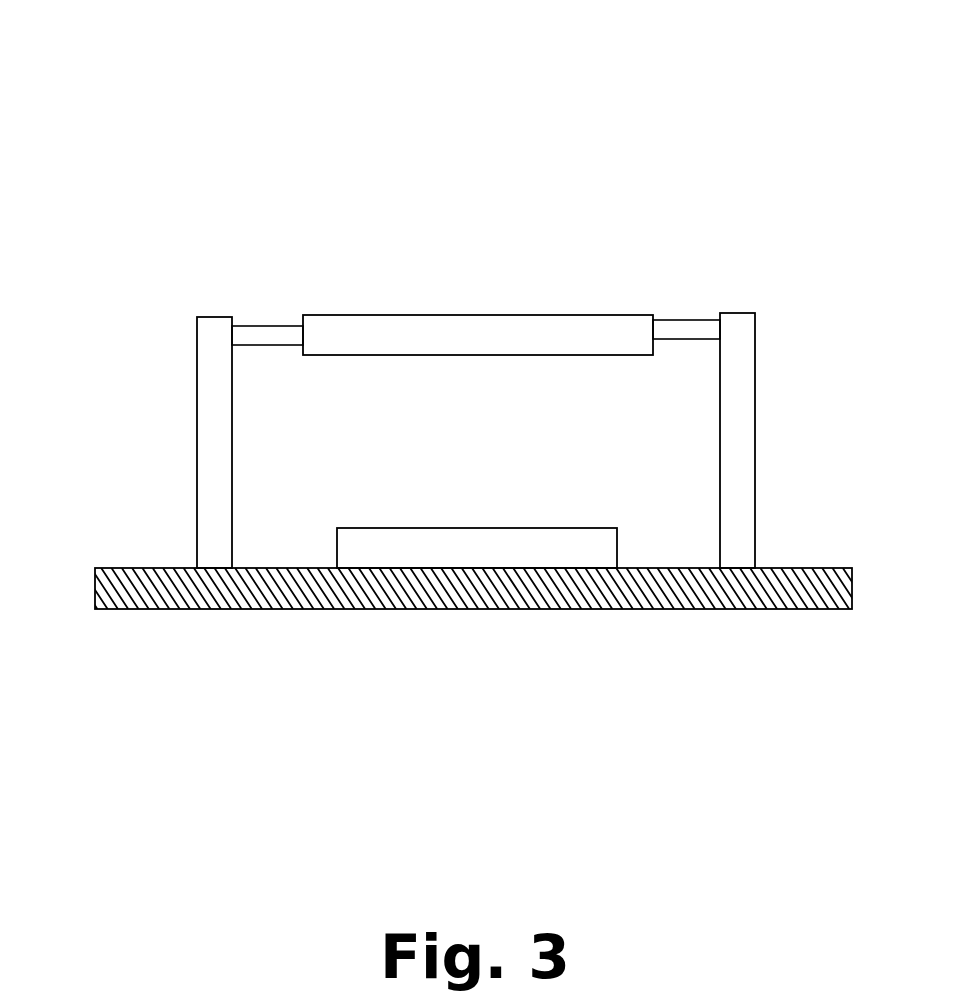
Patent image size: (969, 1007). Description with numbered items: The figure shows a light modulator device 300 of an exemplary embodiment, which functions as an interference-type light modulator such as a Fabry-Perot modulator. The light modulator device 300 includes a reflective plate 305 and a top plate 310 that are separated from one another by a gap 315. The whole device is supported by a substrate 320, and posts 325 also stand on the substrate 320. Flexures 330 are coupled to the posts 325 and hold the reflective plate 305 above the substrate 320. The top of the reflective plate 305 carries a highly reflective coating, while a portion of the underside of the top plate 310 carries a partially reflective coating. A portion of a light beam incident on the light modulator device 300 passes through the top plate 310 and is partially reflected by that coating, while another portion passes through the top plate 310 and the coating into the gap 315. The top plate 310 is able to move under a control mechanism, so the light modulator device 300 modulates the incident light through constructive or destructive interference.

The light modulator device 300 is at (186, 74).
The reflective plate 305 is at (498, 561).
The top plate 310 is at (500, 347).
The gap 315 is at (595, 471).
The substrate 320 is at (470, 585).
The posts 325 is at (197, 443).
The flexures 330 is at (275, 347).